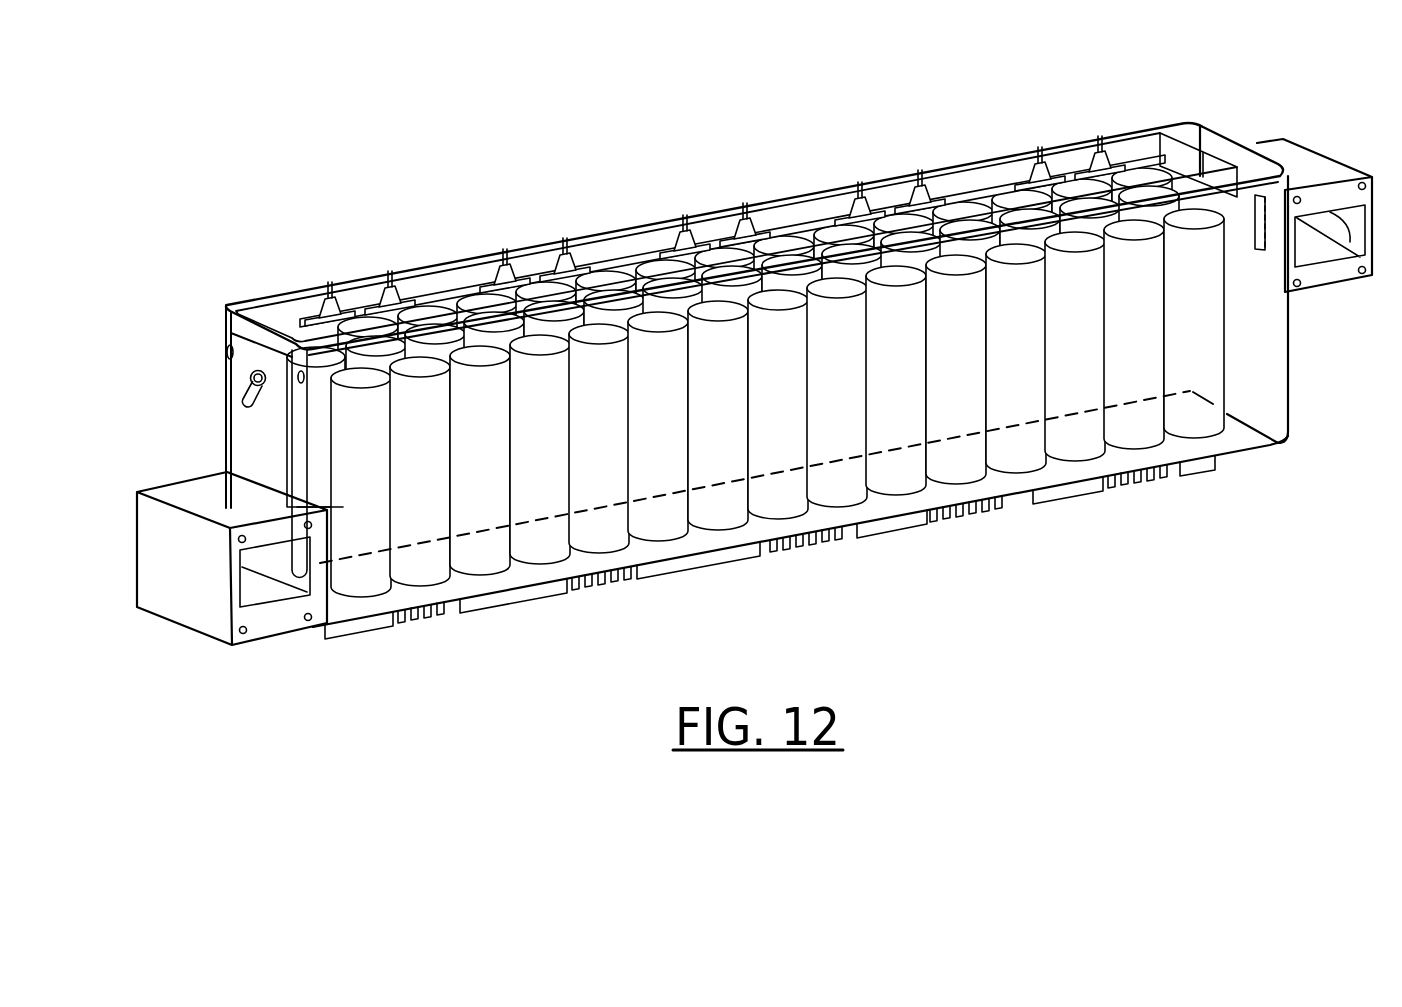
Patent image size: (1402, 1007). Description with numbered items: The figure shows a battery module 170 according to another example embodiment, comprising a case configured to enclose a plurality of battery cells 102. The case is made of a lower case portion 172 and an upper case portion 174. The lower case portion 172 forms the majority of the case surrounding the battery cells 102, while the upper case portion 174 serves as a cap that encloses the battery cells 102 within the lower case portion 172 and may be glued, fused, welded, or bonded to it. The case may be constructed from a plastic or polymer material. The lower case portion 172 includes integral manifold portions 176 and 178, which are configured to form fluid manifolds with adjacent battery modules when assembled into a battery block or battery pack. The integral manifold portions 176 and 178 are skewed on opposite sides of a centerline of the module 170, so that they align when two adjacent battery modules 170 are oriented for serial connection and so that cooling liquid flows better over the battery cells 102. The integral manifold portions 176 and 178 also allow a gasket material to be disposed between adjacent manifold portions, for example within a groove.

The battery module 170 is at (530, 70).
The lower case portion 172 is at (225, 395).
The upper case portion 174 is at (638, 222).
The integral manifold portion 176 is at (267, 640).
The integral manifold portion 178 is at (1340, 283).
The battery cells 102 is at (1216, 274).